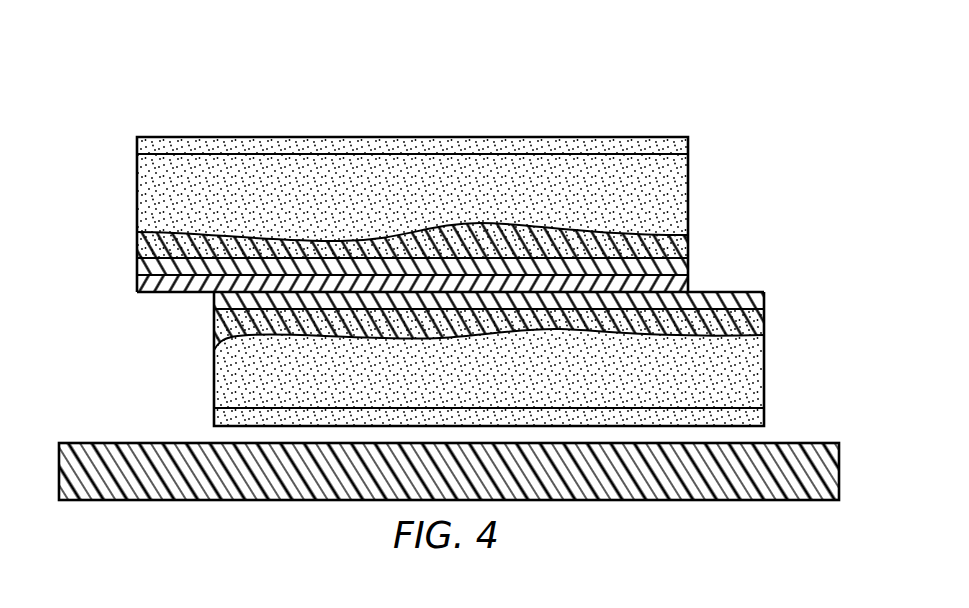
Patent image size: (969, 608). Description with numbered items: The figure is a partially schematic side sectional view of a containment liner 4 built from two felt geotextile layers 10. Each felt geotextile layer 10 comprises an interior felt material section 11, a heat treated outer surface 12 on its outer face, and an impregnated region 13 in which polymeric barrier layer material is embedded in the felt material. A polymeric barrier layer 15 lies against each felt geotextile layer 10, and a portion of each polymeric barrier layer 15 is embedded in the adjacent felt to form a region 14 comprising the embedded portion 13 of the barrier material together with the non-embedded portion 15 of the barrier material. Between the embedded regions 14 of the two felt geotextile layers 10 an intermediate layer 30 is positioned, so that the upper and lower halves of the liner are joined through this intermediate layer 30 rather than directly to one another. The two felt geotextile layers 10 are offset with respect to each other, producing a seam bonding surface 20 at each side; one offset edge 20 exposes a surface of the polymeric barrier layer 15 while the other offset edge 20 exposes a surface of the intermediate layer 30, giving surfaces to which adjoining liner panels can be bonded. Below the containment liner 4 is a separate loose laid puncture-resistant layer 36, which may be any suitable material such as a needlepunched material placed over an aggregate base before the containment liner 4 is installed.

The containment liner 4 is at (187, 115).
The felt geotextile layer 10 is at (701, 137).
The interior felt material section 11 is at (150, 192).
The heat treated outer surface 12 is at (160, 147).
The impregnated region 13 is at (153, 233).
The region 14 is at (134, 233).
The polymeric barrier layer 15 is at (220, 302).
The seam bonding surface 20 is at (170, 293).
The intermediate layer 30 is at (139, 287).
The puncture-resistant layer 36 is at (76, 472).